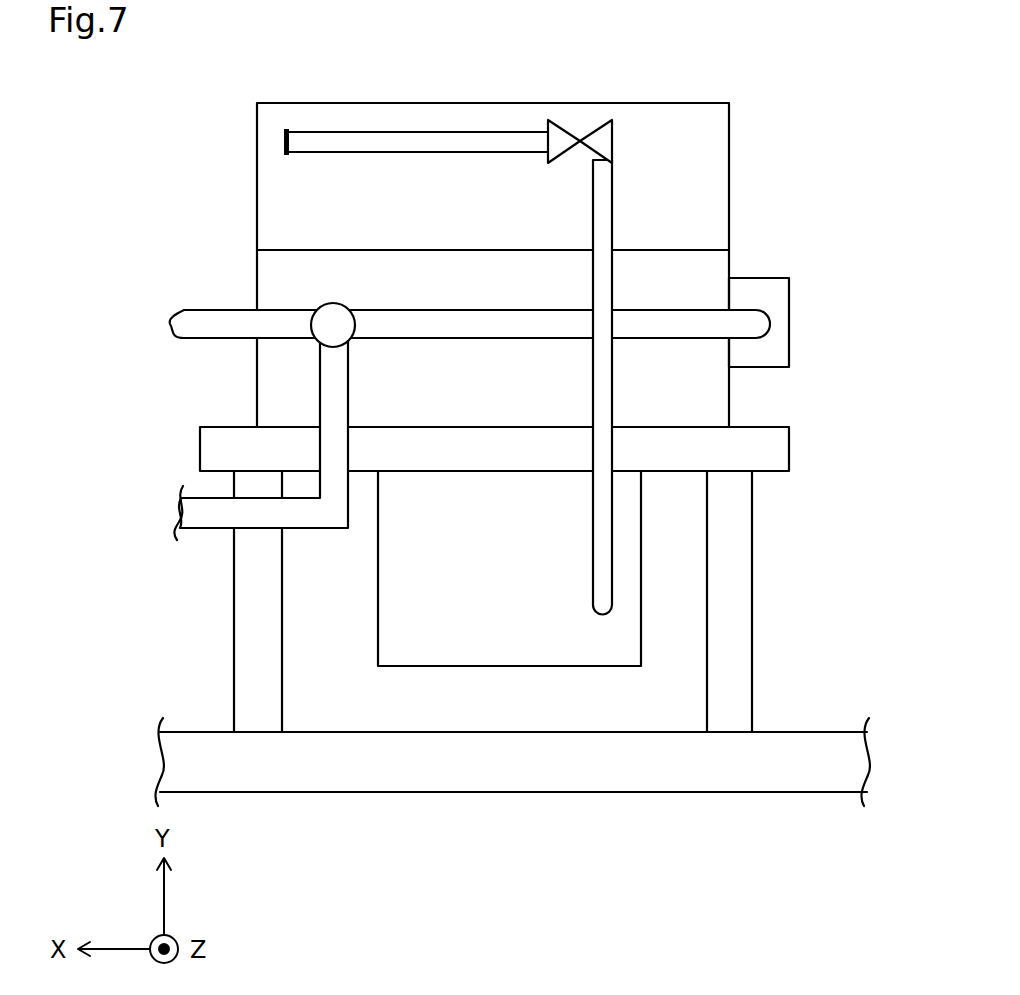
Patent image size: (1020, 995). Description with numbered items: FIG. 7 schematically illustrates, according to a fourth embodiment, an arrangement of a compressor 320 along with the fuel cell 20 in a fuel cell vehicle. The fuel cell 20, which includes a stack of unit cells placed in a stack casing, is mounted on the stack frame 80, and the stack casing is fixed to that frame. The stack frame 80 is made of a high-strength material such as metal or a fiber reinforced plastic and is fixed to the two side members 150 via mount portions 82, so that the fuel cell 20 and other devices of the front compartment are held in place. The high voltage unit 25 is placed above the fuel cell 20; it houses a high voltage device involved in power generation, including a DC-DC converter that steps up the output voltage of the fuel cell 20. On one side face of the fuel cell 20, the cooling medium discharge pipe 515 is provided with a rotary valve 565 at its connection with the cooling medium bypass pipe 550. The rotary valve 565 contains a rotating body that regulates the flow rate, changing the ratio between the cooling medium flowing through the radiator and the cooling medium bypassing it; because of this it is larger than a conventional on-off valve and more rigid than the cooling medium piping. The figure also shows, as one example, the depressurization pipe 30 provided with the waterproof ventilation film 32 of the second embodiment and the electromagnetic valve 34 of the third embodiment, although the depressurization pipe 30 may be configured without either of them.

The fuel cell 20 is at (729, 392).
The high voltage unit 25 is at (729, 172).
The depressurization pipe 30 is at (612, 551).
The waterproof ventilation film 32 is at (285, 136).
The electromagnetic valve 34 is at (600, 122).
The stack frame 80 is at (770, 471).
The mount portions 82 is at (257, 603).
The side members 150 is at (826, 732).
The compressor 320 is at (582, 667).
The cooling medium discharge pipe 515 is at (190, 310).
The cooling medium bypass pipe 550 is at (325, 530).
The rotary valve 565 is at (318, 343).